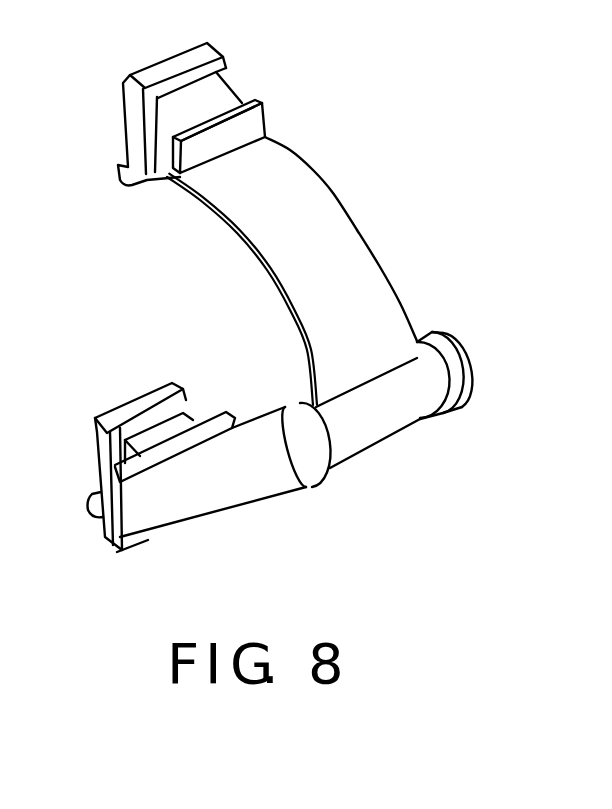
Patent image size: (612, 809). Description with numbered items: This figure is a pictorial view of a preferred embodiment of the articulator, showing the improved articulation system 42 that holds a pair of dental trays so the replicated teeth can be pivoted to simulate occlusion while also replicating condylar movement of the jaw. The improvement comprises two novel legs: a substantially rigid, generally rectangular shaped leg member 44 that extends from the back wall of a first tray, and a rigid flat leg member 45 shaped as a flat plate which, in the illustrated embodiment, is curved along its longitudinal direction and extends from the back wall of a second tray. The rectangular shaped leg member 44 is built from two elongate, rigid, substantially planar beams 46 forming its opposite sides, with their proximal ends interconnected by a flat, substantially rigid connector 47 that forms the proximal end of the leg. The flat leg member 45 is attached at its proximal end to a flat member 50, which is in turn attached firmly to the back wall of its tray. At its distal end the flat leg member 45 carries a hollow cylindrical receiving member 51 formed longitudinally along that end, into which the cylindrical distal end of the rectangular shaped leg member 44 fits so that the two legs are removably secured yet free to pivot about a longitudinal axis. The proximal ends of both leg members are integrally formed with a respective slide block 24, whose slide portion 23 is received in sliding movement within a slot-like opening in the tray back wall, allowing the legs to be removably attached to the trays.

The slide portion 23 is at (147, 70).
The slide block 24 is at (216, 93).
The articulation system 42 is at (385, 215).
The rectangular shaped leg member 44 is at (255, 513).
The flat leg member 45 is at (264, 224).
The planar beam 46 is at (447, 340).
The connector 47 is at (108, 500).
The flat member 50 is at (243, 128).
The hollow cylindrical receiving member 51 is at (373, 425).